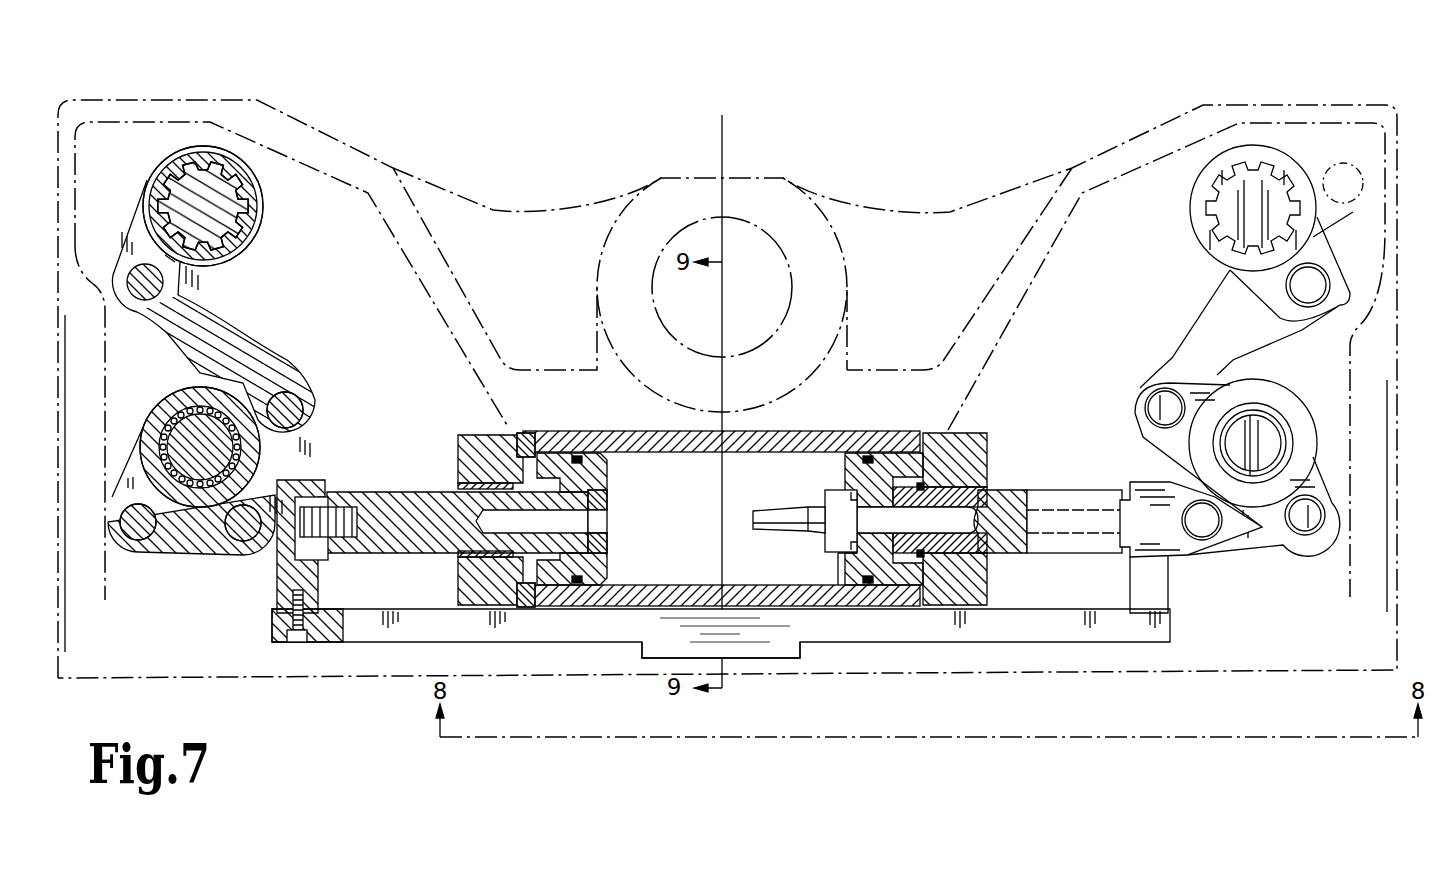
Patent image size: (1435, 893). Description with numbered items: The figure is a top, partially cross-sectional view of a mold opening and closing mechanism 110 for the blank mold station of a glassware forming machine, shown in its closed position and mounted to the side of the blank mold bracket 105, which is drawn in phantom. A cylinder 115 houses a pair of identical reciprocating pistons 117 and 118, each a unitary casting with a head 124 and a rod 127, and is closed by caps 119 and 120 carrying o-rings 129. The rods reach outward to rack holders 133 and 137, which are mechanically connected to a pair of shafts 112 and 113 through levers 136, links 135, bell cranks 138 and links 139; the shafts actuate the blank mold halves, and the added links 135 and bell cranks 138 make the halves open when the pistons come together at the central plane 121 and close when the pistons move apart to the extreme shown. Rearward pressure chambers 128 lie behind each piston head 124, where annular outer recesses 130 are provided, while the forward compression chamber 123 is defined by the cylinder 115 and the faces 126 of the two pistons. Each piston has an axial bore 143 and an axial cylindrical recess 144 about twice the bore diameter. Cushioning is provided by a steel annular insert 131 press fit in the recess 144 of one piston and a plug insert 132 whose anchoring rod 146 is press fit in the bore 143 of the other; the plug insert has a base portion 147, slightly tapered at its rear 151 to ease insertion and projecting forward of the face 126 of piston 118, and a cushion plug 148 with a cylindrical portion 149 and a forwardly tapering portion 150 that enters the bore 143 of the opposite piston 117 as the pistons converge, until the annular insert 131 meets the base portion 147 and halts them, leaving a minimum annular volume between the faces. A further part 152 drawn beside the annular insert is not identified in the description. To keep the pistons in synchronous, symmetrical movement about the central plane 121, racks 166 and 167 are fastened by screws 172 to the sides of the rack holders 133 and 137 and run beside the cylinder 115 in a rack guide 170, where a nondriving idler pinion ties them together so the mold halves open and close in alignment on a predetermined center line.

The blank mold bracket 105 is at (800, 203).
The mold opening and closing mechanism 110 is at (836, 398).
The shaft 112 is at (175, 160).
The shaft 113 is at (1210, 200).
The cylinder 115 is at (645, 430).
The piston 117 is at (362, 492).
The piston 118 is at (1045, 490).
The cap 119 is at (458, 445).
The cap 120 is at (967, 433).
The central plane 121 is at (725, 138).
The forward compression chamber 123 is at (685, 458).
The piston head 124 is at (595, 460).
The piston face 126 is at (608, 472).
The piston rod 127 is at (427, 543).
The rearward pressure chamber 128 is at (550, 587).
The o-ring 129 is at (522, 455).
The annular outer recess 130 is at (553, 430).
The steel annular insert 131 is at (608, 499).
The plug insert 132 is at (822, 535).
The rack holder 133 is at (298, 478).
The link 135 is at (222, 330).
The lever 136 is at (130, 235).
The rack holder 137 is at (1145, 482).
The bell crank 138 is at (140, 428).
The link 139 is at (197, 556).
The axial bore 143 is at (530, 530).
The axial cylindrical recess 144 is at (608, 549).
The anchoring rod 146 is at (1005, 498).
The base portion 147 is at (838, 555).
The cushion plug 148 is at (778, 510).
The cylindrical portion 149 is at (815, 510).
The forwardly tapering portion 150 is at (772, 530).
The tapered rear of base portion 151 is at (860, 500).
The spacer 152 is at (608, 523).
The rack 166 is at (462, 634).
The rack 167 is at (866, 634).
The rack guide 170 is at (800, 652).
The screw 172 is at (300, 642).